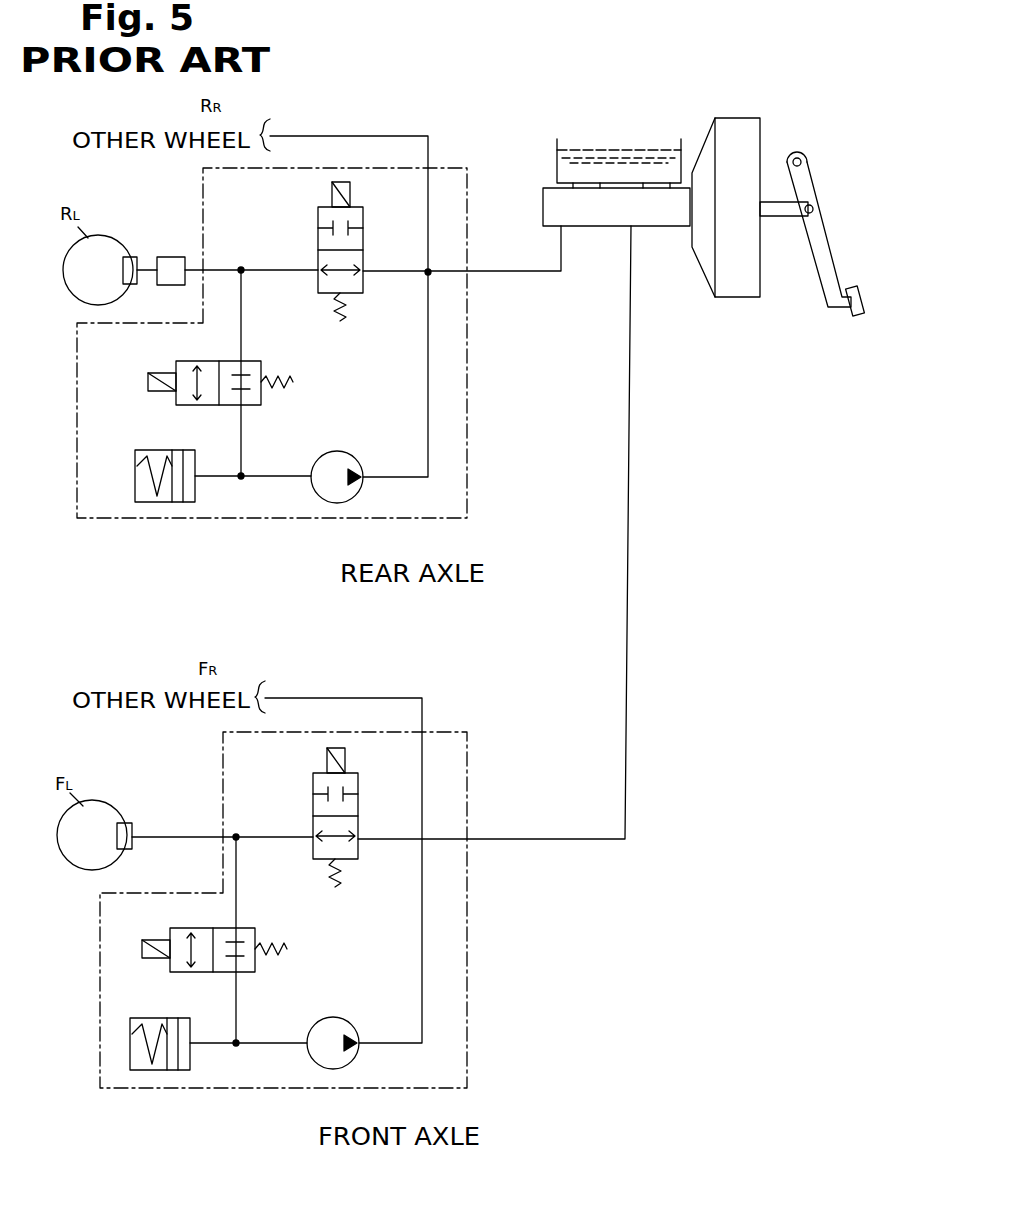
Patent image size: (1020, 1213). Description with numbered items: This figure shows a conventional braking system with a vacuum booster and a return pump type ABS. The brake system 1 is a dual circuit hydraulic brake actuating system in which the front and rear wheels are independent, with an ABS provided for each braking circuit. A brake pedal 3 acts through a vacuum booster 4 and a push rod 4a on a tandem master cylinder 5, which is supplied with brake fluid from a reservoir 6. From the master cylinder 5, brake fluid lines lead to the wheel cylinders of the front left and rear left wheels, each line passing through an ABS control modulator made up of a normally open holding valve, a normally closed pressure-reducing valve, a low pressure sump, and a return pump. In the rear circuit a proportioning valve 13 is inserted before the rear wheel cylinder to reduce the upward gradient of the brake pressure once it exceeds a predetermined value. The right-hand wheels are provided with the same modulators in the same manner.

The brake system 1 is at (787, 818).
The brake pedal 3 is at (860, 316).
The vacuum booster 4 is at (752, 141).
The push rod 4a is at (781, 212).
The tandem master cylinder 5 is at (664, 227).
The reservoir 6 is at (553, 167).
The proportioning valve 13 is at (165, 286).